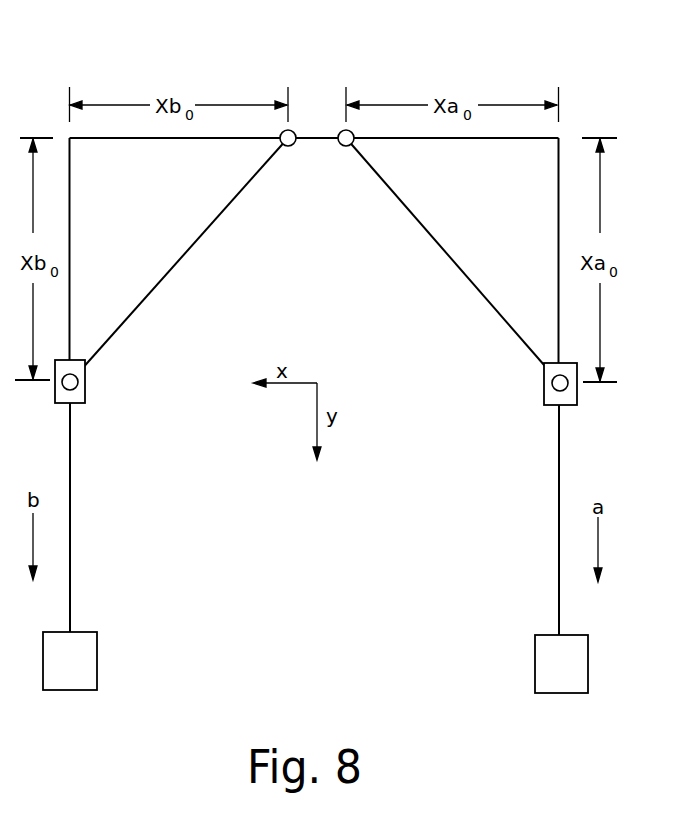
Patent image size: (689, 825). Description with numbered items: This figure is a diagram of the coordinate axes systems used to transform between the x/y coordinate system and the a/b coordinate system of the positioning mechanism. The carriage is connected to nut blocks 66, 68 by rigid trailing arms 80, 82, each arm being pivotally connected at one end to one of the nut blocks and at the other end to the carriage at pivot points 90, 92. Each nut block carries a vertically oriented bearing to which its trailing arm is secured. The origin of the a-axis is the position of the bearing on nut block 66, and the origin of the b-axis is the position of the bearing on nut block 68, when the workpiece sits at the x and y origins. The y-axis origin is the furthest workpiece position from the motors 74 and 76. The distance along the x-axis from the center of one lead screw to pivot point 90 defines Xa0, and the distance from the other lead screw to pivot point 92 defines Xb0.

The nut block 66 is at (567, 407).
The nut block 68 is at (86, 378).
The motor 74 is at (575, 663).
The motor 76 is at (82, 660).
The rigid trailing arm 80 is at (443, 250).
The rigid trailing arm 82 is at (188, 251).
The pivot point 90 is at (340, 131).
The pivot point 92 is at (296, 131).